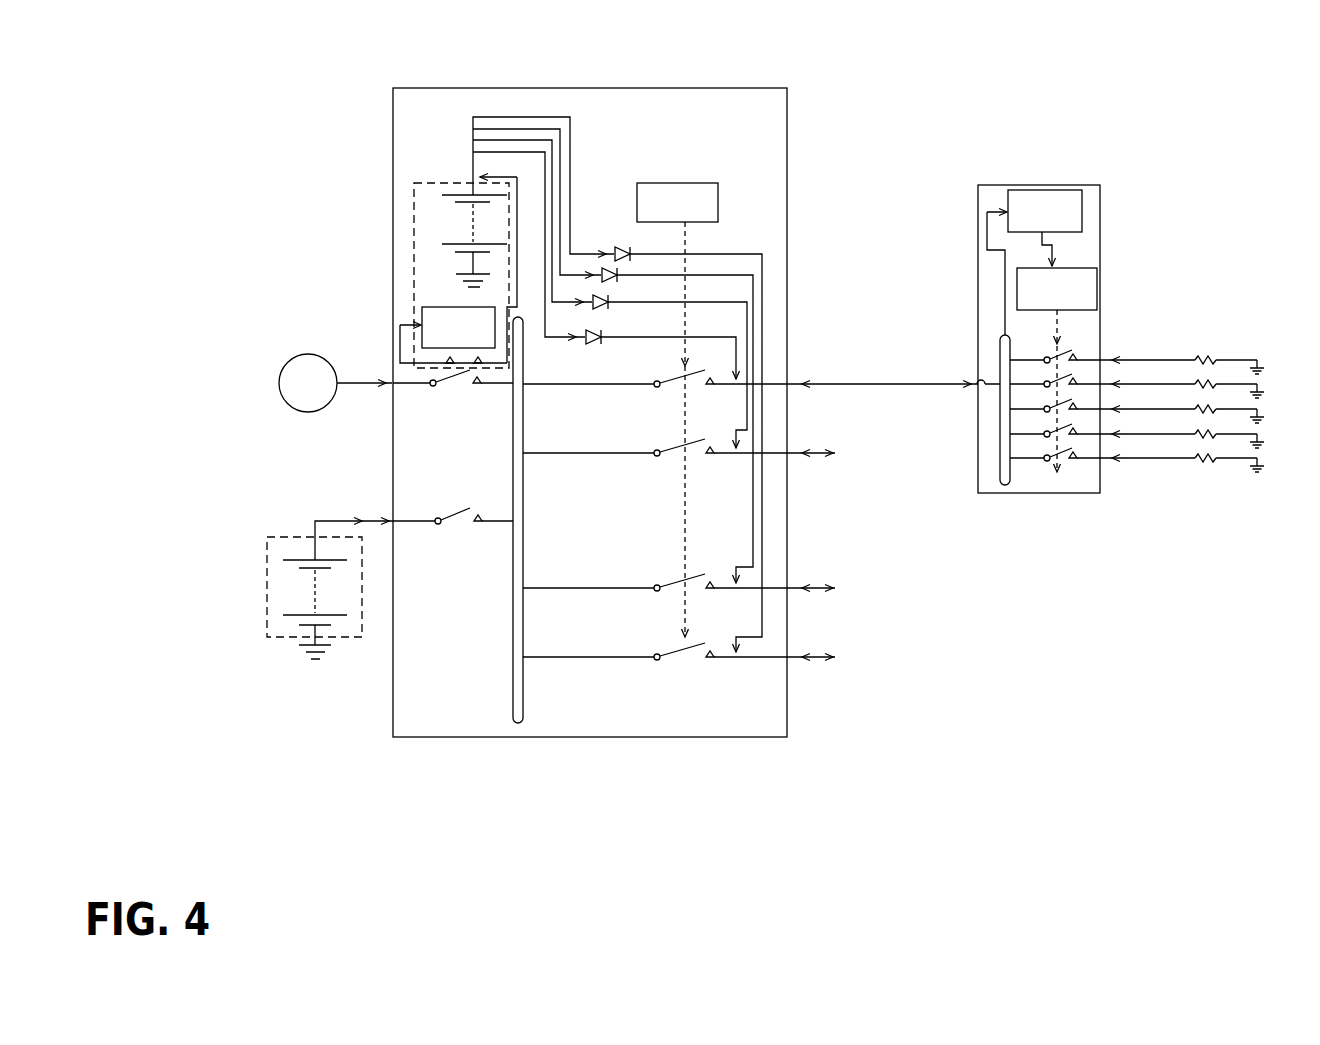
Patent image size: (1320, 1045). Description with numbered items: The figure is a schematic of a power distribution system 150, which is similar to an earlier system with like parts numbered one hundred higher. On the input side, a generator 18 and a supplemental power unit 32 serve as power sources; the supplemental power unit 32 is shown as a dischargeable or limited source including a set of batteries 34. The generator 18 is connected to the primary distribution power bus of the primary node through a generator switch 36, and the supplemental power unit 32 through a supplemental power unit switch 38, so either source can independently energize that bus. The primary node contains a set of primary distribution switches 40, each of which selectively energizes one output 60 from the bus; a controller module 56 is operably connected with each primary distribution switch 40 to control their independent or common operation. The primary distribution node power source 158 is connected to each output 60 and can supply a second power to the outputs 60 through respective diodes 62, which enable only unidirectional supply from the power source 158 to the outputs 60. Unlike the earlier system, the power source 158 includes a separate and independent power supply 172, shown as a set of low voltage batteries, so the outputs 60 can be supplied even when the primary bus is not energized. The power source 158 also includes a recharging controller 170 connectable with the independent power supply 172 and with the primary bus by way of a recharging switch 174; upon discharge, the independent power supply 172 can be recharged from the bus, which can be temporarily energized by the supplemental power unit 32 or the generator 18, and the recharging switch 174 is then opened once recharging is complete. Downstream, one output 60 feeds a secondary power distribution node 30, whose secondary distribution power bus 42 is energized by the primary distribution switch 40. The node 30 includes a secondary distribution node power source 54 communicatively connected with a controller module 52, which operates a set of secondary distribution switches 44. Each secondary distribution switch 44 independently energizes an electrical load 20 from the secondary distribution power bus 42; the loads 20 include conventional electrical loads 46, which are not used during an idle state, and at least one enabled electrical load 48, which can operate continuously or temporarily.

The power distribution system 150 is at (590, 376).
The primary distribution node power source 158 is at (410, 197).
The independent power supply 172 is at (445, 247).
The recharging controller 170 is at (458, 327).
The recharging switch 174 is at (437, 361).
The generator 18 is at (335, 383).
The generator switch 36 is at (460, 393).
The supplemental power unit switch 38 is at (460, 530).
The supplemental power unit 32 is at (265, 578).
The set of batteries 34 is at (280, 627).
The diode 62 is at (603, 347).
The controller module 56 is at (677, 410).
The primary distribution switch 40 is at (660, 632).
The output 60 is at (745, 645).
The secondary power distribution node 30 is at (988, 183).
The secondary distribution node power source 54 is at (1045, 228).
The controller module 52 is at (1057, 370).
The secondary distribution power bus 42 is at (998, 457).
The secondary distribution switch 44 is at (1072, 472).
The electrical load 20 is at (1203, 322).
The conventional electrical load 46 is at (1215, 432).
The enabled electrical load 48 is at (1217, 458).